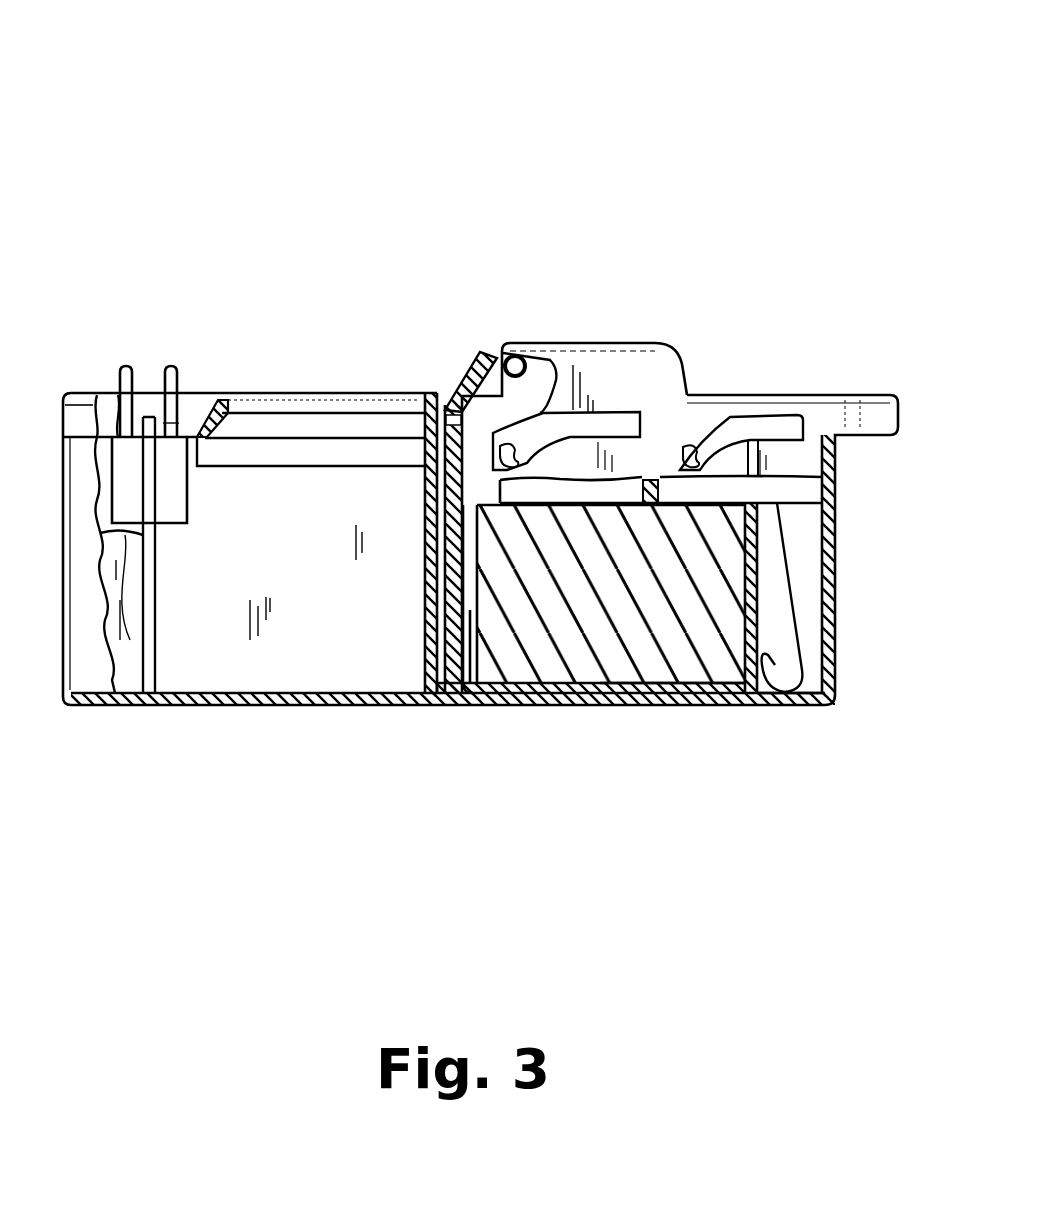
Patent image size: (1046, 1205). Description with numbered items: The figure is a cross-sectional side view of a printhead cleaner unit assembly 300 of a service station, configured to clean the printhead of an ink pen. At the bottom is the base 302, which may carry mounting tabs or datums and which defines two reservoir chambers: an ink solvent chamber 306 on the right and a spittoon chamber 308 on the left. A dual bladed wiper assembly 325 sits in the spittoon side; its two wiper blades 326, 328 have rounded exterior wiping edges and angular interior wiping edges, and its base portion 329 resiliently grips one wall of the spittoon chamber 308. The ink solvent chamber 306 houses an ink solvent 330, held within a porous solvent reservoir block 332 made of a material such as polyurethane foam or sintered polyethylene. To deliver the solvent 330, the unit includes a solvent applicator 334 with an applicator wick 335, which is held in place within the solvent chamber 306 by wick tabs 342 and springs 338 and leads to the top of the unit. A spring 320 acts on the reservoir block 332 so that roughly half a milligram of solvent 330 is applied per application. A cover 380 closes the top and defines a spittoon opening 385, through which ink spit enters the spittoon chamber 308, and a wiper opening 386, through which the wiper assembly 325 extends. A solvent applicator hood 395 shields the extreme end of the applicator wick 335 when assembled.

The cleaner unit assembly 300 is at (617, 128).
The base 302 is at (442, 708).
The ink solvent chamber 306 is at (657, 672).
The spittoon chamber 308 is at (250, 700).
The spring 320 is at (805, 568).
The dual bladed wiper assembly 325 is at (148, 308).
The wiper blade 326 is at (123, 365).
The wiper blade 328 is at (175, 365).
The base portion 329 is at (118, 470).
The ink solvent 330 is at (600, 615).
The solvent reservoir block 332 is at (692, 708).
The solvent applicator 334 is at (545, 700).
The applicator wick 335 is at (432, 700).
The spring 338 is at (453, 398).
The wick tab 342 is at (430, 392).
The cover 380 is at (692, 326).
The spittoon opening 385 is at (306, 368).
The wiper opening 386 is at (220, 395).
The solvent applicator hood 395 is at (592, 343).